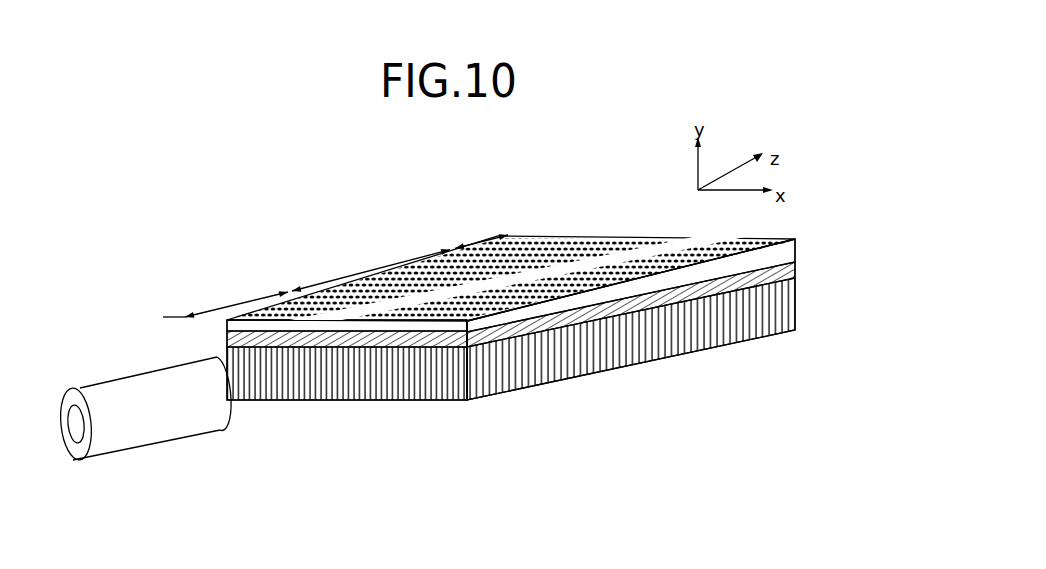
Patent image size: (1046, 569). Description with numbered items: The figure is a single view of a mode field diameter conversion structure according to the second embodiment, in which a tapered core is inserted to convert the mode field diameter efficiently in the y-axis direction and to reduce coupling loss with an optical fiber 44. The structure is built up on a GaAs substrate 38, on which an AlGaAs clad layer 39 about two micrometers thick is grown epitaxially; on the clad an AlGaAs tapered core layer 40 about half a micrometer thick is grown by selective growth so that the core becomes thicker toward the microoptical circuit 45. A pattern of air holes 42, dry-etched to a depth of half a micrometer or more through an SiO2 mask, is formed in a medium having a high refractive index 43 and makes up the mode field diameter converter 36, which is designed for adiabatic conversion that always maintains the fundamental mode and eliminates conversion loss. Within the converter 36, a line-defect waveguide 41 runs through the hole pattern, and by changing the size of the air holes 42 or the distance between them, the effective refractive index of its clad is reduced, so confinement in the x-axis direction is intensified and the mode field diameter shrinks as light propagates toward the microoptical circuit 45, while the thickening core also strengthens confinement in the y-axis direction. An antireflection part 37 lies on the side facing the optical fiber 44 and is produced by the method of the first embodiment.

The mode field diameter converter 36 is at (399, 261).
The antireflection part 37 is at (226, 312).
The GaAs substrate 38 is at (320, 368).
The clad layer 39 is at (357, 340).
The tapered core layer 40 is at (397, 327).
The line-defect waveguide 41 is at (547, 273).
The air holes 42 is at (560, 292).
The medium having a high refractive index 43 is at (616, 284).
The optical fiber 44 is at (187, 390).
The microoptical circuit 45 is at (493, 240).